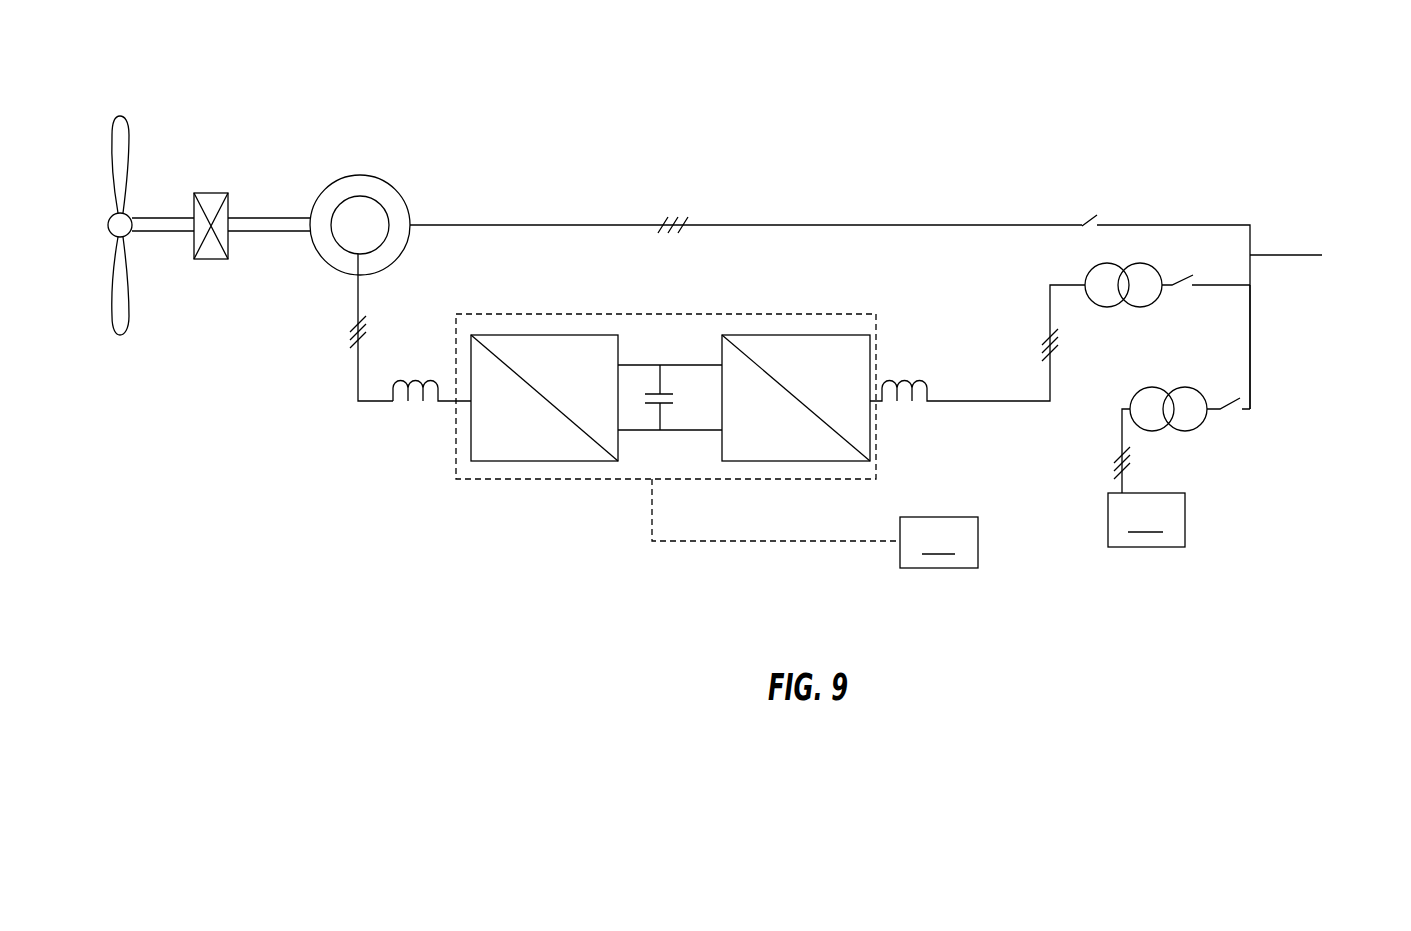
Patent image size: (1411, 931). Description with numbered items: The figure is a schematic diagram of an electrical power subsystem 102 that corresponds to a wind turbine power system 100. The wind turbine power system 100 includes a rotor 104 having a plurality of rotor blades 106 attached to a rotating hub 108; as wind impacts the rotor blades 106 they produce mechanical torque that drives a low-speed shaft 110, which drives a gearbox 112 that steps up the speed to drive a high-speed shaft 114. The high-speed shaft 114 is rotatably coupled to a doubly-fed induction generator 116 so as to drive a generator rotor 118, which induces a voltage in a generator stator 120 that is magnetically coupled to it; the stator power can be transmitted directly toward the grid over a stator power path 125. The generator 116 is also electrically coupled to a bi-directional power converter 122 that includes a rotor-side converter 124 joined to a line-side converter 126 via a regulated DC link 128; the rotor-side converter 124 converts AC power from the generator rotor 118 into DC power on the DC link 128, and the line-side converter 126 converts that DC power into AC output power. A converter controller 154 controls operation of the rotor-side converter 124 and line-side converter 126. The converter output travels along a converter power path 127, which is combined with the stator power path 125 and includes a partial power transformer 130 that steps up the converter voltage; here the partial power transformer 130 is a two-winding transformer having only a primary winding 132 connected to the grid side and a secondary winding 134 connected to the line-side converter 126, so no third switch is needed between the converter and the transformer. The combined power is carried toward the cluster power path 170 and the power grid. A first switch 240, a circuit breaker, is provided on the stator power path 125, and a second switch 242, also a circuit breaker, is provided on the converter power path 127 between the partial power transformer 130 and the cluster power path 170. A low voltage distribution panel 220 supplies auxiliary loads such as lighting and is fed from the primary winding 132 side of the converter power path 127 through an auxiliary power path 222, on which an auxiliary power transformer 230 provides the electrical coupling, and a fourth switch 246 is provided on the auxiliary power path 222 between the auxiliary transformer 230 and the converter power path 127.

The wind turbine power system 100 is at (125, 90).
The electrical power subsystem 102 is at (1002, 118).
The rotor 104 is at (93, 233).
The rotor blades 106 is at (123, 150).
The rotating hub 108 is at (108, 230).
The low-speed shaft 110 is at (147, 228).
The gearbox 112 is at (206, 193).
The high-speed shaft 114 is at (243, 228).
The doubly-fed induction generator 116 is at (382, 174).
The generator rotor 118 is at (343, 257).
The generator stator 120 is at (323, 187).
The bi-directional power converter 122 is at (597, 481).
The rotor-side converter 124 is at (535, 335).
The stator power path 125 is at (728, 225).
The line-side converter 126 is at (798, 335).
The converter power path 127 is at (1052, 373).
The regulated DC link 128 is at (662, 358).
The partial power transformer 130 is at (1137, 318).
The primary winding 132 is at (1157, 270).
The secondary winding 134 is at (1085, 277).
The converter controller 154 is at (815, 523).
The cluster power path 170 is at (1280, 259).
The low voltage distribution panel 220 is at (1146, 478).
The auxiliary power path 222 is at (1252, 327).
The auxiliary power transformer 230 is at (1170, 431).
The first switch 240 is at (1083, 222).
The second switch 242 is at (1185, 292).
The fourth switch 246 is at (1232, 414).